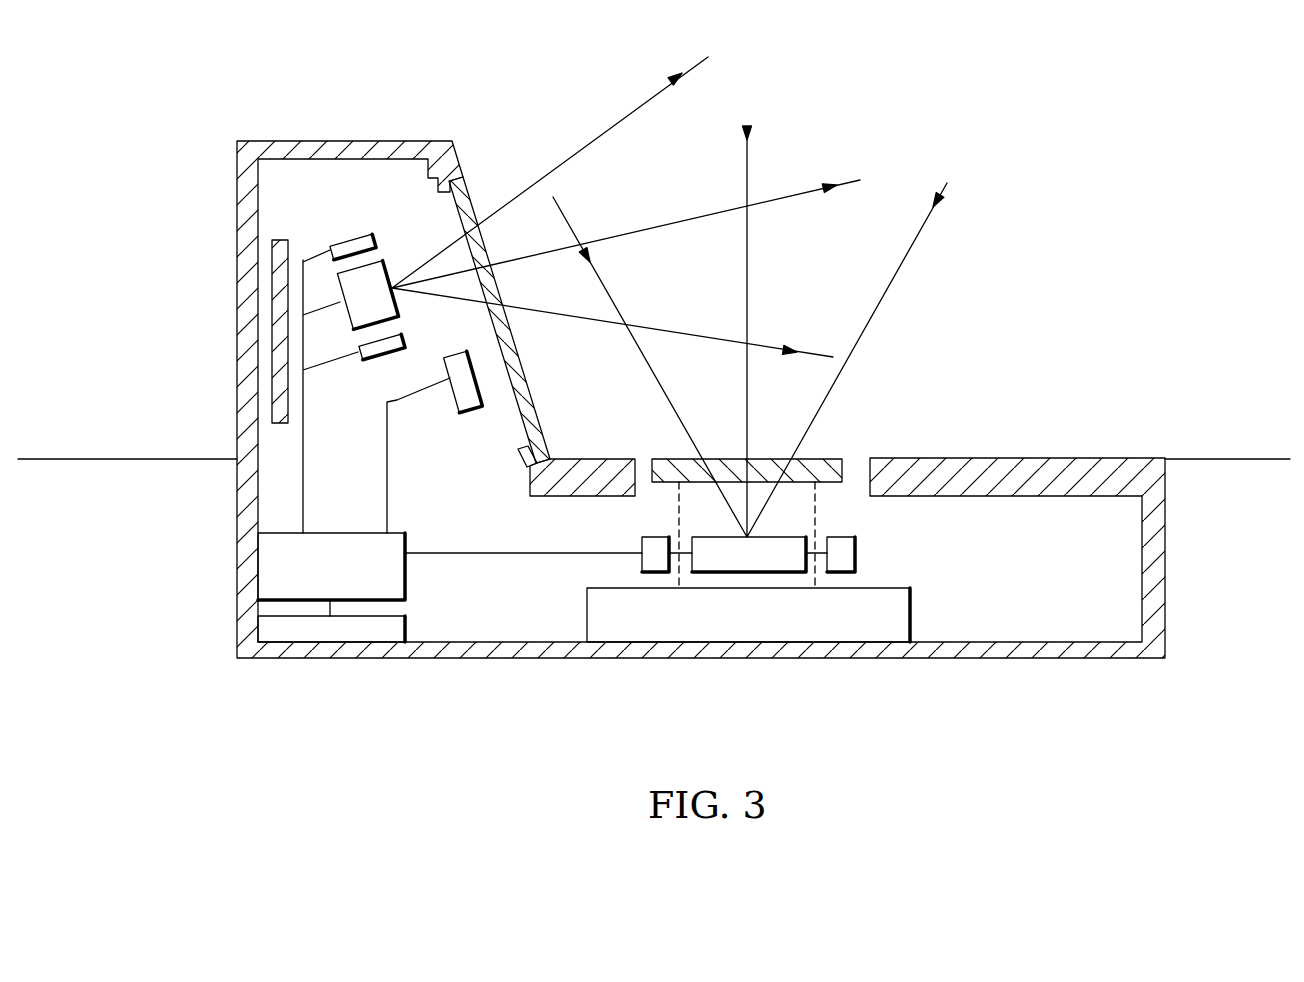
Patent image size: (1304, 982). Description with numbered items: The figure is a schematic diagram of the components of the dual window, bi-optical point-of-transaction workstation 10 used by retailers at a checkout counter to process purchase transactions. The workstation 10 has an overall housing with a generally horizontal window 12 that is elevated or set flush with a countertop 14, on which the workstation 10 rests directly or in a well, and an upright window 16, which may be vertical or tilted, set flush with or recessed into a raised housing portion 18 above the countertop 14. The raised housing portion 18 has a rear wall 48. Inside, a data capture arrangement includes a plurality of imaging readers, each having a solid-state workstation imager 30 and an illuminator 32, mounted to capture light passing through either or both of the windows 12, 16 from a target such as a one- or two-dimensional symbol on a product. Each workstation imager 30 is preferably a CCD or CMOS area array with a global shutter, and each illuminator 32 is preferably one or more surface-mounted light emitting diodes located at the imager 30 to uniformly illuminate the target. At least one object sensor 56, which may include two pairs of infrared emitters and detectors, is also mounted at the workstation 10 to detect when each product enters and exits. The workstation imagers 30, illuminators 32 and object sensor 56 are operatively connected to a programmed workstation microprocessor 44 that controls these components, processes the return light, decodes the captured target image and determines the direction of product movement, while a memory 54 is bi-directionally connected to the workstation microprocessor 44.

The point-of-transaction workstation 10 is at (1000, 290).
The horizontal window 12 is at (832, 477).
The countertop 14 is at (128, 461).
The upright window 16 is at (527, 385).
The raised housing portion 18 is at (355, 153).
The workstation imager 30 is at (340, 283).
The illuminator 32 is at (325, 248).
The workstation microprocessor 44 is at (268, 577).
The rear wall 48 is at (237, 178).
The memory 54 is at (268, 632).
The object sensor 56 is at (462, 404).